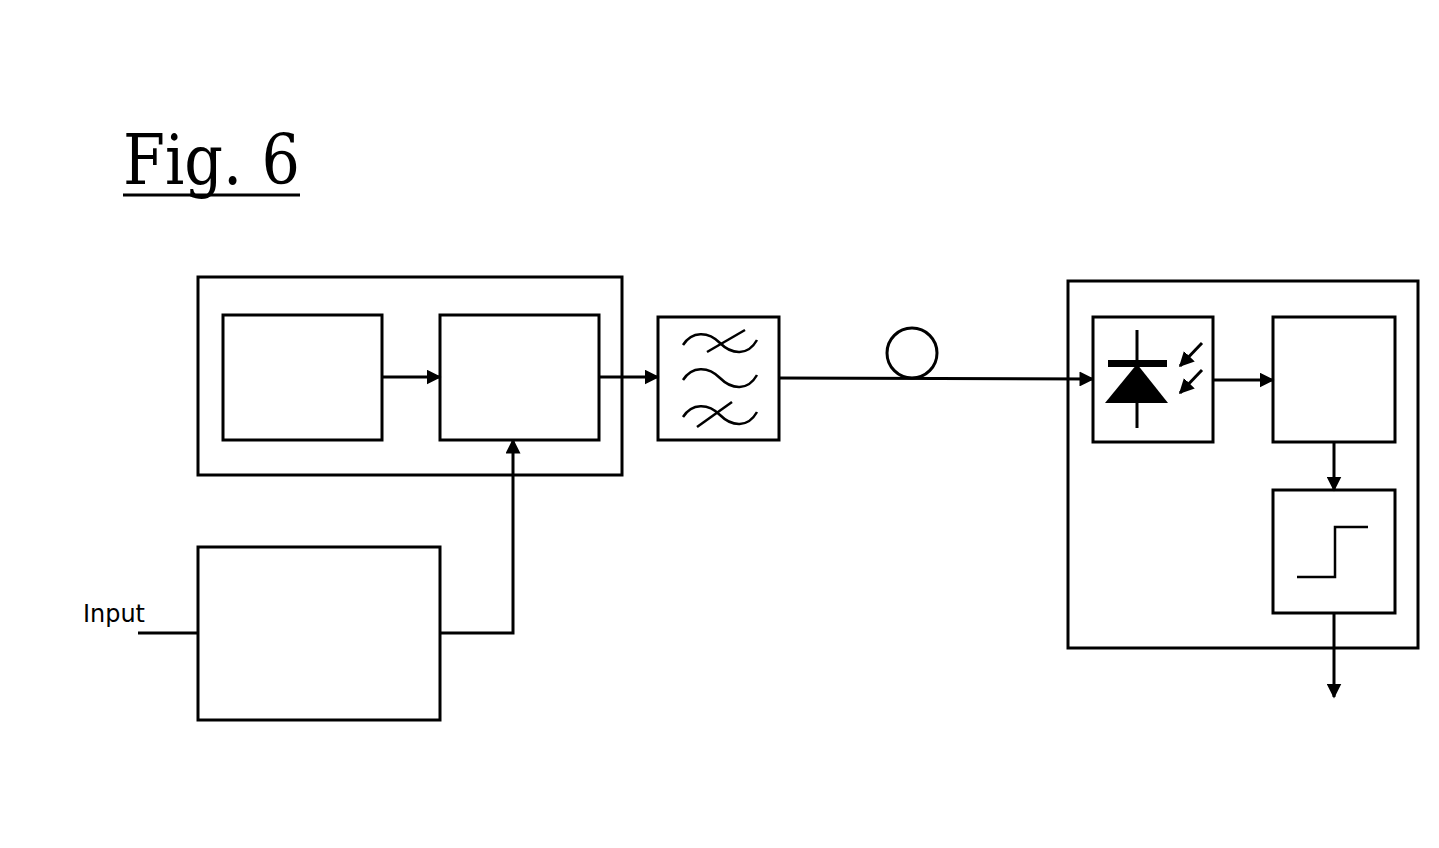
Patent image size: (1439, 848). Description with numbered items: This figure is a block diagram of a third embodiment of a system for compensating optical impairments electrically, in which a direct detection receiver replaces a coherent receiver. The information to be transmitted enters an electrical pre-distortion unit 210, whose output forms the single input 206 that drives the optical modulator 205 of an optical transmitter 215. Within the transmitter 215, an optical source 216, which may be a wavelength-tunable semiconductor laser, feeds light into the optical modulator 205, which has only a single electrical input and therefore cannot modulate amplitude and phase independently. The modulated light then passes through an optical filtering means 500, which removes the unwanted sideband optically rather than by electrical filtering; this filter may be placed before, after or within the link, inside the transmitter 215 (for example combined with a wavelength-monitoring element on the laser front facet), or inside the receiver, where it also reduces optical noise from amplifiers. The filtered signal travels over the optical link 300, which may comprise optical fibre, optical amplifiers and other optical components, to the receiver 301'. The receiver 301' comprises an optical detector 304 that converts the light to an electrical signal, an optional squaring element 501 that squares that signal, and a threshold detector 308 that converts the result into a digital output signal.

The optical transmitter 215 is at (198, 392).
The optical source 216 is at (297, 315).
The optical modulator 205 is at (512, 315).
The optical filtering means 500 is at (718, 316).
The optical link 300 is at (934, 340).
The receiver 301' is at (1183, 464).
The optical detector 304 is at (1153, 317).
The squaring element 501 is at (1333, 317).
The threshold detector 308 is at (1273, 538).
The pre-distortion unit 210 is at (382, 720).
The single input 206 is at (513, 585).